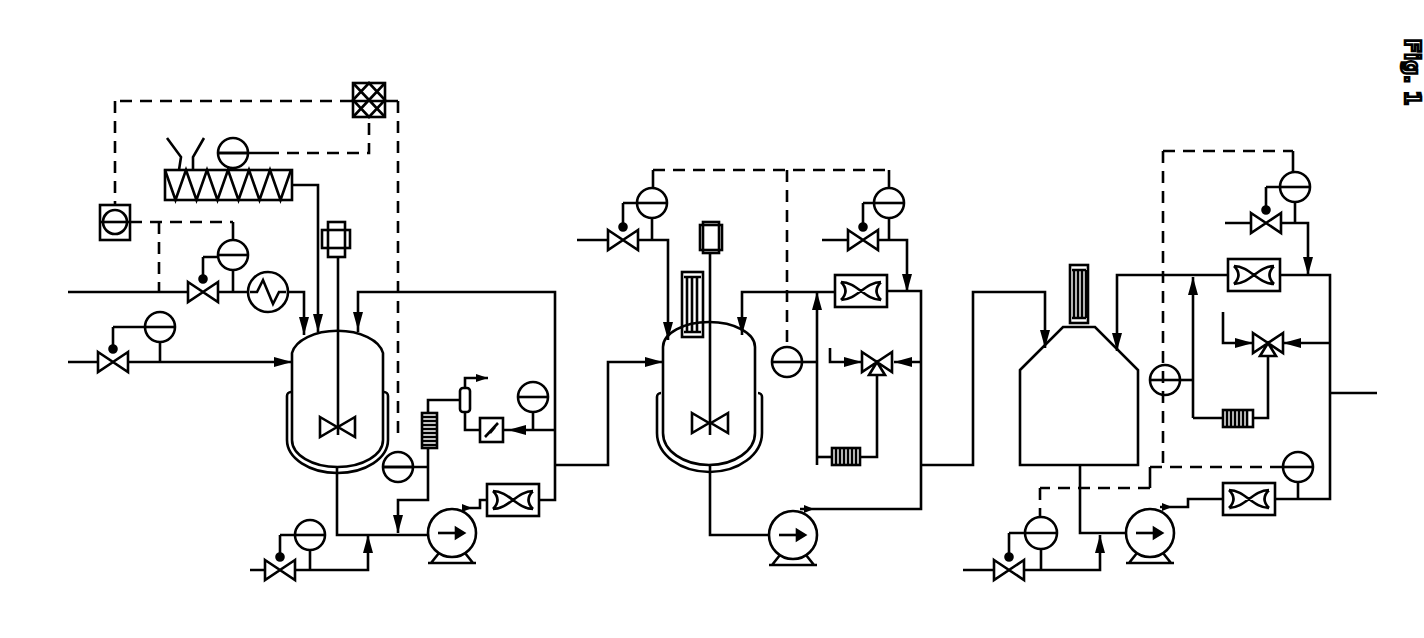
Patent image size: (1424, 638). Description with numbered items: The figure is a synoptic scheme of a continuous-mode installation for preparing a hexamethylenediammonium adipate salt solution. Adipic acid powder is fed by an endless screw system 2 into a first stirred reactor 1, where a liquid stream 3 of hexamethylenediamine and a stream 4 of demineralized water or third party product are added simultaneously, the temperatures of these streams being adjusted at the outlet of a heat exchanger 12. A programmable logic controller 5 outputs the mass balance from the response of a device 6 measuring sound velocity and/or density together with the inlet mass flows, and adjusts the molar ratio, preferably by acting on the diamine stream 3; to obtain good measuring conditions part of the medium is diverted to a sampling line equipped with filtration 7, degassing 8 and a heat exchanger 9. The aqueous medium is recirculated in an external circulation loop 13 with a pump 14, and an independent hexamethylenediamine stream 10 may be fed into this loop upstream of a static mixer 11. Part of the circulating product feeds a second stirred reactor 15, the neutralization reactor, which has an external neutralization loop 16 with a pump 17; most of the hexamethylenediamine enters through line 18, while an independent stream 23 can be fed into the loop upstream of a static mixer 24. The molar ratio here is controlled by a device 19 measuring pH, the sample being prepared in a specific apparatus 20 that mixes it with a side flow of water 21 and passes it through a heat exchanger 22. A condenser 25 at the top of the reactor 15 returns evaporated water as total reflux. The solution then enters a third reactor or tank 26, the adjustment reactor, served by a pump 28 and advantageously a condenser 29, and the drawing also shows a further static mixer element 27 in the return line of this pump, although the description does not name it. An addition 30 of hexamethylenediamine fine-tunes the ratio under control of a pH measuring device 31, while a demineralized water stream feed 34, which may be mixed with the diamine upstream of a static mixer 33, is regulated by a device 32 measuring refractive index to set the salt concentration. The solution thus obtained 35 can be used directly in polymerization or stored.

The first stirred reactor 1 is at (285, 430).
The endless screw system 2 is at (177, 169).
The liquid stream of hexamethylenediamine 3 is at (130, 292).
The stream of demineralized water or third party product 4 is at (87, 362).
The programmable logic controller 5 is at (353, 83).
The device measuring sound velocity and/or density 6 is at (382, 466).
The filtration 7 is at (492, 443).
The degassing 8 is at (458, 396).
The heat exchanger 9 is at (438, 430).
The hexamethylenediamine stream 10 is at (250, 570).
The static mixer 11 is at (513, 516).
The heat exchanger 12 is at (264, 310).
The external circulation loop 13 is at (482, 292).
The pump 14 is at (452, 567).
The second stirred reactor 15 is at (678, 461).
The external neutralization loop 16 is at (765, 292).
The pump 17 is at (793, 567).
The line 18 is at (592, 240).
The device for measuring pH 19 is at (787, 380).
The specific apparatus 20 is at (885, 377).
The side flow of water 21 is at (830, 348).
The heat exchanger 22 is at (847, 467).
The stream 23 is at (838, 240).
The static mixer 24 is at (883, 303).
The condenser 25 is at (692, 273).
The third reactor or tank 26 is at (1025, 368).
The filter 27 is at (1248, 513).
The pump 28 is at (1150, 568).
The condenser 29 is at (1068, 267).
The addition of HMD 30 is at (1242, 223).
The device for measuring pH 31 is at (1164, 396).
The device to measure refractive index 32 is at (1298, 448).
The static mixer 33 is at (1268, 289).
The demineralized water stream feed 34 is at (980, 570).
The solution obtained 35 is at (1352, 393).